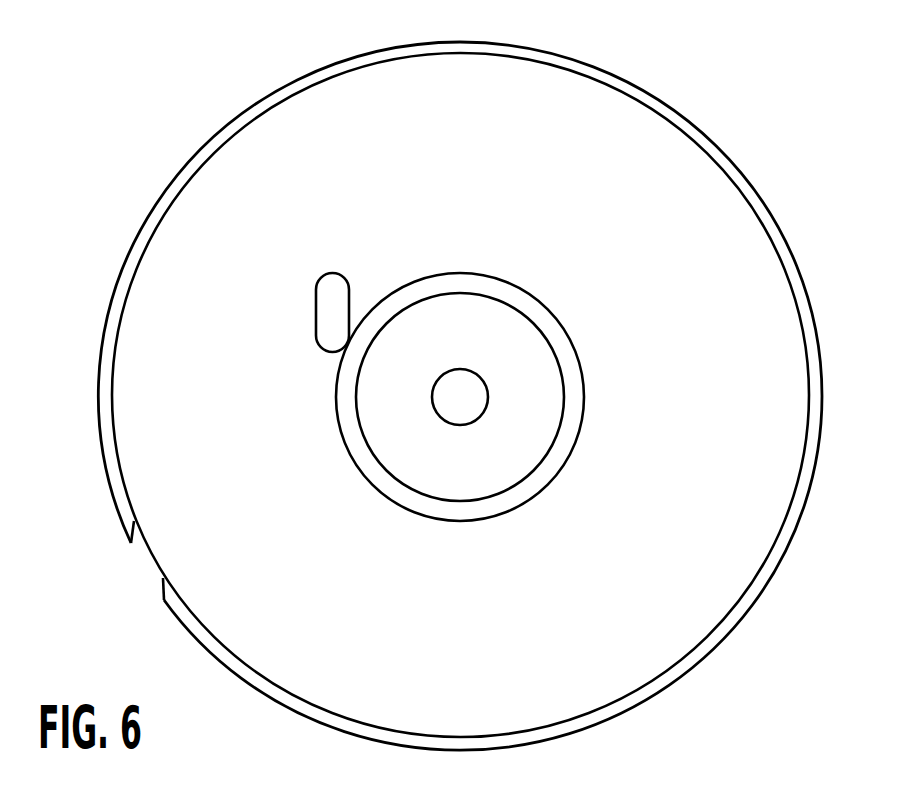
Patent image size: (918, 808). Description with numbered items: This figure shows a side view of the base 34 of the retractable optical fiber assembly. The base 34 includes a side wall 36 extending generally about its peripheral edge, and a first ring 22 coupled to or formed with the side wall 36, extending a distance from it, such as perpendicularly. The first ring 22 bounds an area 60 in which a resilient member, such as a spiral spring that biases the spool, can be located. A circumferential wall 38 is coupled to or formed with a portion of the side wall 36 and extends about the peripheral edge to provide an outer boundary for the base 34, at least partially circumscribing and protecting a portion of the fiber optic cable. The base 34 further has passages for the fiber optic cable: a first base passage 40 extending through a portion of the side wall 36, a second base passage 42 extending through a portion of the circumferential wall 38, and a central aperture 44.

The first ring 22 is at (564, 442).
The base 34 is at (830, 219).
The side wall 36 is at (618, 614).
The circumferential wall 38 is at (152, 190).
The first base passage 40 is at (335, 280).
The second base passage 42 is at (137, 574).
The central aperture 44 is at (478, 395).
The area 60 is at (424, 482).